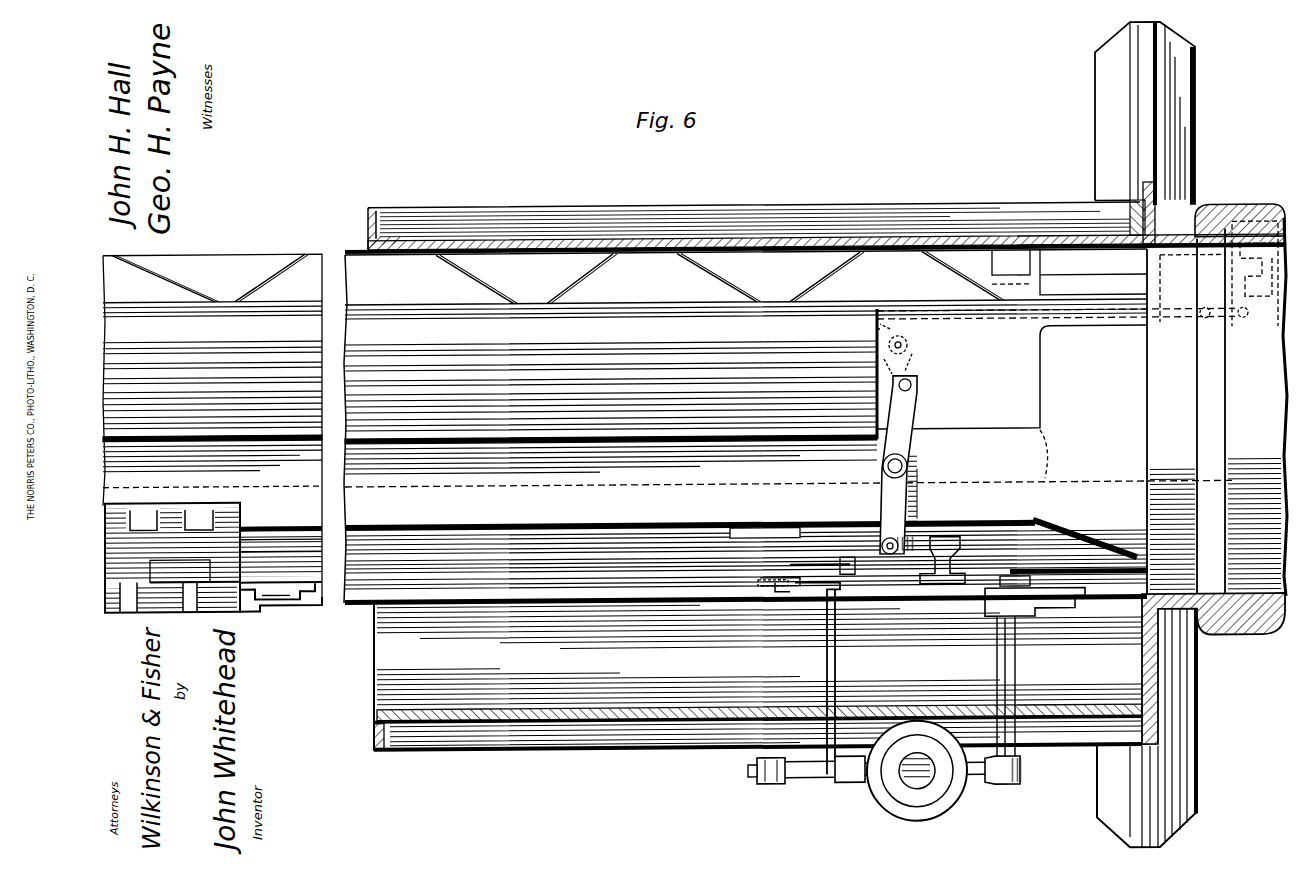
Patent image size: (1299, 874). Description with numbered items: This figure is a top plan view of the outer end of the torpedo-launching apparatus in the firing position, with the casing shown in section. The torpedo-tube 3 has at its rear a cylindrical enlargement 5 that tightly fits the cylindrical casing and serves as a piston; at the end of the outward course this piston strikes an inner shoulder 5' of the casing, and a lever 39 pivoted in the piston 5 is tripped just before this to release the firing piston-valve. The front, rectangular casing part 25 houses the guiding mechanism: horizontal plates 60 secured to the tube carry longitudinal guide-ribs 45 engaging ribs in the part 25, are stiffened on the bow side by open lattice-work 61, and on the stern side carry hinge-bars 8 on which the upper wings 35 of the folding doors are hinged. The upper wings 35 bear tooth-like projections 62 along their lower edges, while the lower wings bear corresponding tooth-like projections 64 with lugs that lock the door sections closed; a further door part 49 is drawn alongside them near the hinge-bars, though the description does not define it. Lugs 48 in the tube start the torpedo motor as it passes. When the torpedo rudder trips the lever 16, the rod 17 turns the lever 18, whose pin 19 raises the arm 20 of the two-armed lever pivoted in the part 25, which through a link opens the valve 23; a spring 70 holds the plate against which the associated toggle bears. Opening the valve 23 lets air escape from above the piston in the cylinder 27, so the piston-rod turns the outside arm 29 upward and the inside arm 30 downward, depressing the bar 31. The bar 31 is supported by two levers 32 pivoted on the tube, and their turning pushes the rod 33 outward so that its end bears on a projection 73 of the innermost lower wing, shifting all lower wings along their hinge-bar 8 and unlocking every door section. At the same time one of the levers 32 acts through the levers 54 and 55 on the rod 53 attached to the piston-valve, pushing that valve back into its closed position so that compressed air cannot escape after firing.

The torpedo-tube 3 is at (1012, 402).
The cylindrical enlargement (piston) 5 is at (1191, 309).
The inner shoulder 5' is at (1191, 720).
The hinge-bar 8 is at (200, 518).
The lever 16 is at (272, 582).
The rod 17 is at (525, 570).
The lever 18 is at (851, 565).
The pin 19 is at (788, 578).
The arm of two-armed lever 20 is at (778, 585).
The valve 23 is at (860, 782).
The front or outer part of torpedo-tube casing 25 is at (758, 675).
The cylinder 27 is at (905, 795).
The outside arm of lever 29 is at (972, 782).
The inside arm of lever 30 is at (1042, 600).
The bar 31 is at (1068, 540).
The levers 32 is at (1012, 580).
The rod 33 is at (598, 588).
The upper halves or wings of folding doors 35 is at (176, 582).
The lever 39 is at (1270, 226).
The guide-ribs 45 is at (746, 389).
The lugs 48 is at (745, 528).
The angle bar 49 is at (246, 594).
The rod 53 is at (997, 318).
The lever 54 is at (910, 424).
The lever 55 is at (906, 372).
The horizontal plates 60 is at (746, 547).
The open lattice-work 61 is at (562, 290).
The tooth-like projections 62 is at (188, 600).
The tooth-like projections 64 is at (122, 598).
The spring 70 is at (805, 778).
The projection 73 is at (248, 542).